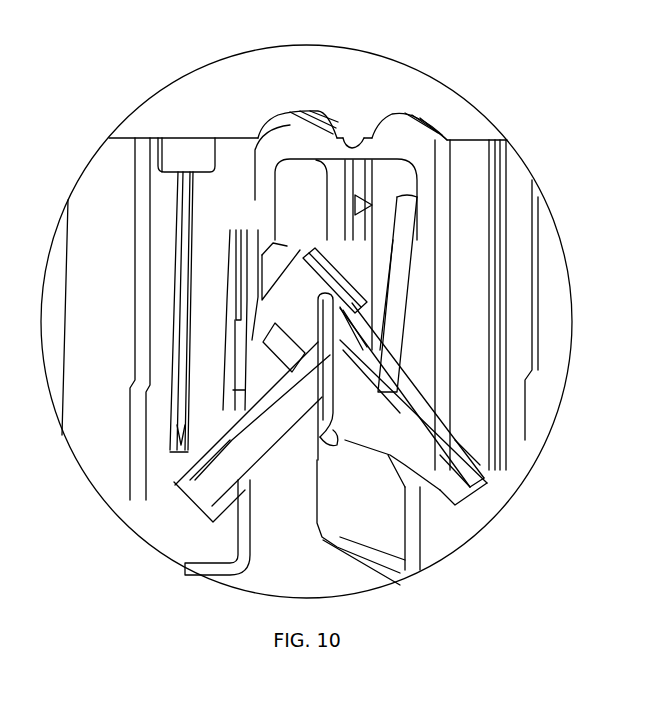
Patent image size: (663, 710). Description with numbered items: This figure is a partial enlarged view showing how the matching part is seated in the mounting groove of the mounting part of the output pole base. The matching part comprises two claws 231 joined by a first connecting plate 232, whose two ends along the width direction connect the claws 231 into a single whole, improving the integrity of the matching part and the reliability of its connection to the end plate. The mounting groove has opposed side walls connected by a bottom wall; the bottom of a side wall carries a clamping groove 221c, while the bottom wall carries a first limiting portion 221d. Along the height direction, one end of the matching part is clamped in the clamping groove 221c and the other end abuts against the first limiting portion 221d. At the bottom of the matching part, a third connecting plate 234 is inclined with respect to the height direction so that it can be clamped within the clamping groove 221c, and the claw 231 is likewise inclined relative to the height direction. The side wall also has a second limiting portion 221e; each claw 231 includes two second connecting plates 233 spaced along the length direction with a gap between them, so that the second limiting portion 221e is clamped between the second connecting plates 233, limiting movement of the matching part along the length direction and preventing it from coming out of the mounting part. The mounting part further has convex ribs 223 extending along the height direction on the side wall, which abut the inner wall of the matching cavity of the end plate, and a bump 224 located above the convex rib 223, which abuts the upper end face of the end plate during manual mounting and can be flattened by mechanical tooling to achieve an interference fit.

The first limiting portion 221d is at (354, 123).
The second limiting portion 221e is at (367, 210).
The clamping groove 221c is at (473, 490).
The convex rib 223 is at (500, 180).
The bump 224 is at (167, 137).
The claw 231 is at (323, 247).
The first connecting plate 232 is at (293, 145).
The second connecting plate 233 is at (388, 347).
The third connecting plate 234 is at (388, 455).